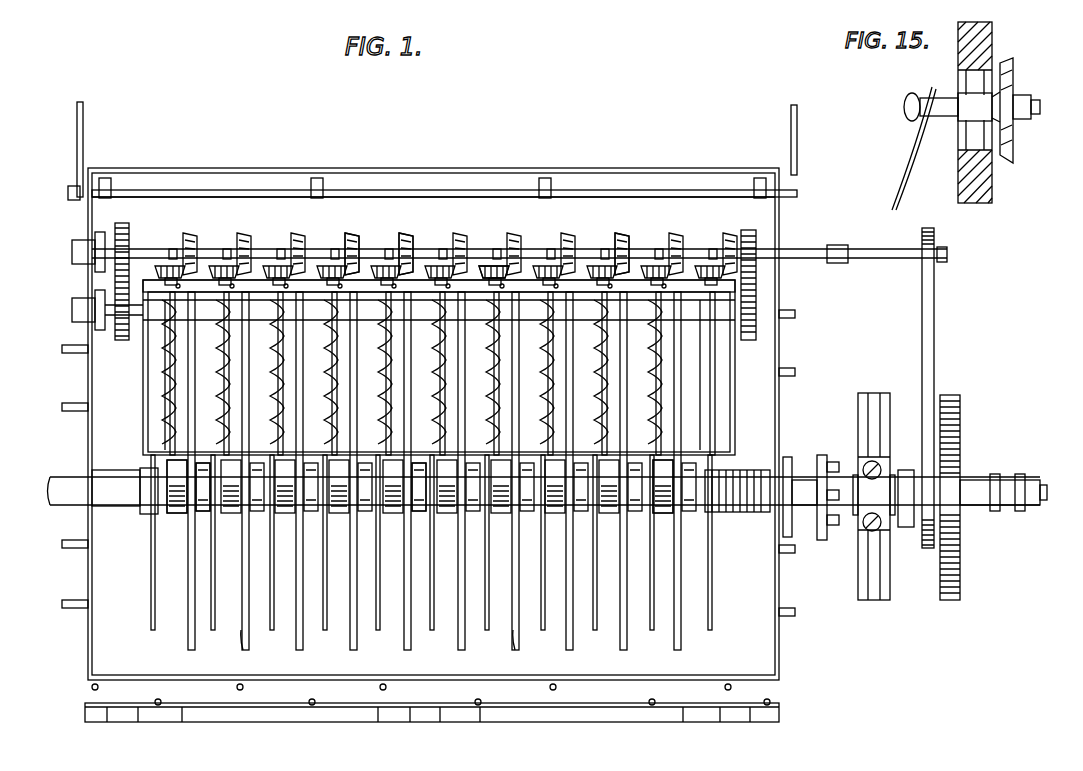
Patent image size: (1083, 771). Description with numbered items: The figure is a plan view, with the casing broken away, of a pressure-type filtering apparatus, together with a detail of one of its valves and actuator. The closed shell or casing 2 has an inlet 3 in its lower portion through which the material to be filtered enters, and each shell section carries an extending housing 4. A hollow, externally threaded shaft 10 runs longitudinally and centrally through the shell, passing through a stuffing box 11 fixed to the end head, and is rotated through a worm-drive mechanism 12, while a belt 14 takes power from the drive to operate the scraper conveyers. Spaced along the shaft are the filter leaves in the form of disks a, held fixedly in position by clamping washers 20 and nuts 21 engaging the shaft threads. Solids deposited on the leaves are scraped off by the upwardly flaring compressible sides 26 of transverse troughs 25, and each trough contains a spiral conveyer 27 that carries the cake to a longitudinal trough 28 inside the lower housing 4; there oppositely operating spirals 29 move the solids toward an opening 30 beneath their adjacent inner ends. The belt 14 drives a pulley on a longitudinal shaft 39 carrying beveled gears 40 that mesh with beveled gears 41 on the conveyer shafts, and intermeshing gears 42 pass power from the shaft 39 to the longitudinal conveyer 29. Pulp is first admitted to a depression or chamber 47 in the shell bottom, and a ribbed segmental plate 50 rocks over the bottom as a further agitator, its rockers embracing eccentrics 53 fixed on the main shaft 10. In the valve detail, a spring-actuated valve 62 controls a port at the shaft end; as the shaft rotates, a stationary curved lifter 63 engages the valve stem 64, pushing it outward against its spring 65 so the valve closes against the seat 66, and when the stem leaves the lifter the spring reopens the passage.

In FIG. 1, the shell or casing 2 is at (780, 650).
In FIG. 1, the inlet 3 is at (568, 285).
In FIG. 1, the housing 4 is at (393, 192).
In FIG. 1, the hollow shaft 10 is at (760, 512).
In FIG. 1, the stuffing box 11 is at (805, 485).
In FIG. 1, the worm-drive mechanism 12 is at (963, 497).
In FIG. 1, the belt 14 is at (940, 333).
In FIG. 1, the clamping washer 20 is at (172, 514).
In FIG. 1, the nut 21 is at (203, 512).
In FIG. 1, the trough 25 is at (160, 398).
In FIG. 1, the compressible side 26 is at (160, 371).
In FIG. 1, the spiral conveyer 27 is at (270, 365).
In FIG. 1, the longitudinal trough 28 is at (450, 290).
In FIG. 1, the oppositely operating spiral 29 is at (190, 285).
In FIG. 1, the opening 30 is at (520, 268).
In FIG. 1, the longitudinal shaft 39 is at (325, 262).
In FIG. 1, the beveled gear 40 is at (455, 248).
In FIG. 1, the beveled gear 41 is at (268, 265).
In FIG. 1, the intermeshing gears 42 is at (115, 226).
In FIG. 1, the depression or chamber 47 is at (150, 468).
In FIG. 1, the segmental plate 50 is at (246, 636).
In FIG. 1, the eccentric 53 is at (140, 495).
In FIG. 1, the filter disk a is at (186, 645).
In FIG. 15, the valve 62 is at (1010, 130).
In FIG. 15, the curved lifter 63 is at (900, 148).
In FIG. 15, the valve stem 64 is at (940, 118).
In FIG. 15, the spring 65 is at (1005, 82).
In FIG. 15, the seat 66 is at (988, 172).